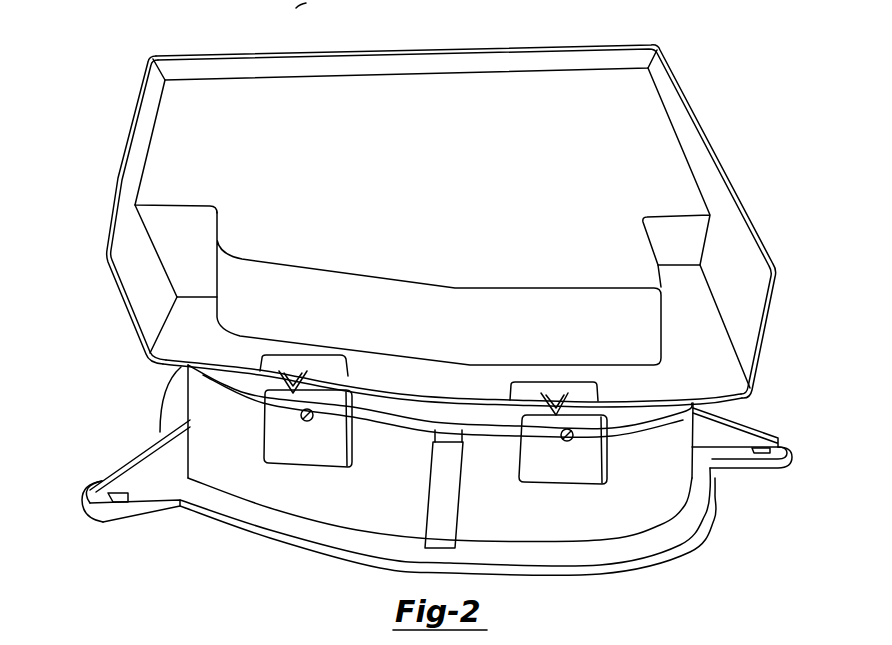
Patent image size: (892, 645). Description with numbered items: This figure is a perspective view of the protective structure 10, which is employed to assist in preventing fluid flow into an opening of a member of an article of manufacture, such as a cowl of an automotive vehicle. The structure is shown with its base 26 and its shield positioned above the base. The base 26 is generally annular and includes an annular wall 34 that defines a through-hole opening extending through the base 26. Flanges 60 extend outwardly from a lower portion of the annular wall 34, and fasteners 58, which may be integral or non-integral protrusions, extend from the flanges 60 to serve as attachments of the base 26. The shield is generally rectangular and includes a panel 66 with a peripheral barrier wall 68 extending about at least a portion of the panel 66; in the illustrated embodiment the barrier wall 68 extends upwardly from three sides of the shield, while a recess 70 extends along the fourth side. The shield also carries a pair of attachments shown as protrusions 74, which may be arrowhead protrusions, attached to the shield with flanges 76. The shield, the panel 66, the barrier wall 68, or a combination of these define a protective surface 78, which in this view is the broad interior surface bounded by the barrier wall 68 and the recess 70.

The protective structure 10 is at (742, 81).
The base 26 is at (570, 530).
The annular wall 34 is at (399, 502).
The fasteners 58 is at (306, 0).
The flanges 60 is at (103, 505).
The panel 66 is at (398, 126).
The barrier wall 68 is at (598, 60).
The recess 70 is at (708, 369).
The protrusions 74 is at (292, 380).
The flanges 76 is at (509, 392).
The protective surface 78 is at (516, 253).